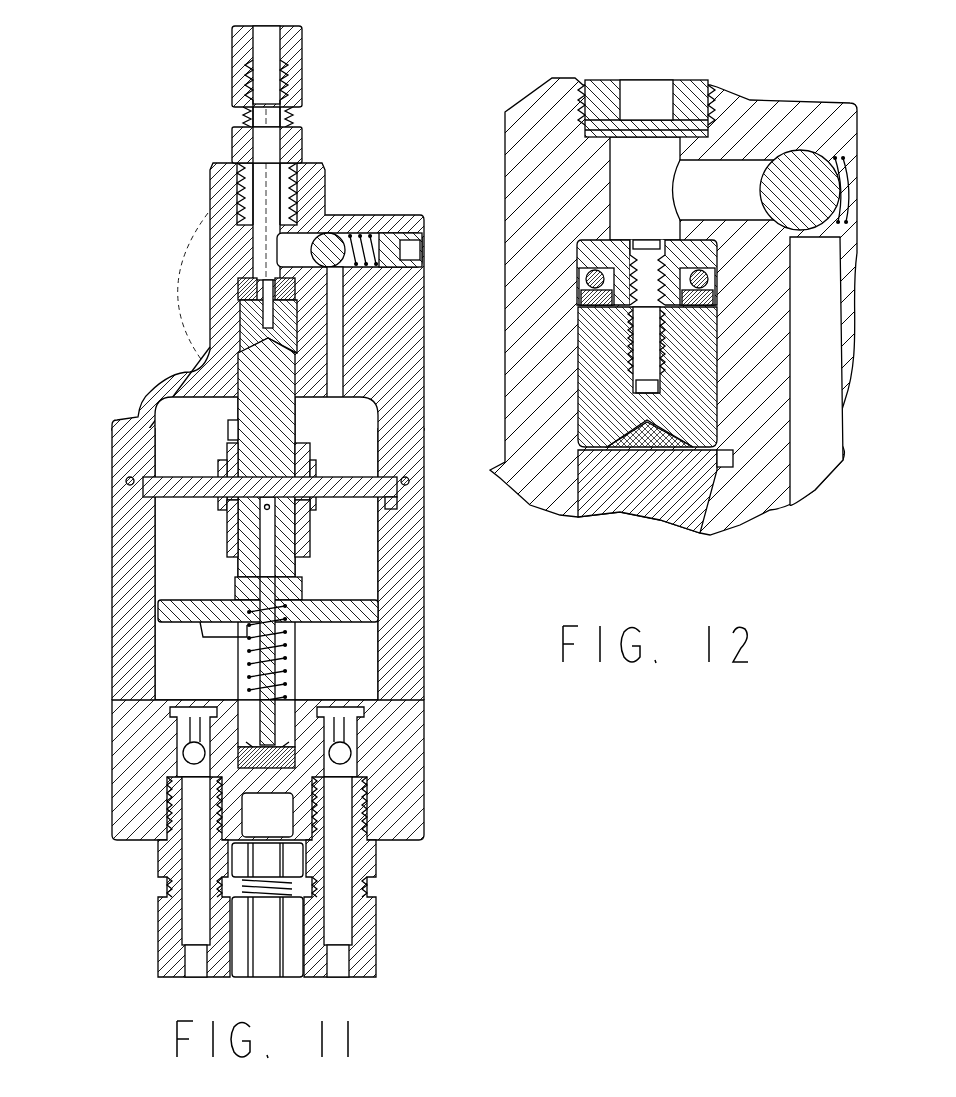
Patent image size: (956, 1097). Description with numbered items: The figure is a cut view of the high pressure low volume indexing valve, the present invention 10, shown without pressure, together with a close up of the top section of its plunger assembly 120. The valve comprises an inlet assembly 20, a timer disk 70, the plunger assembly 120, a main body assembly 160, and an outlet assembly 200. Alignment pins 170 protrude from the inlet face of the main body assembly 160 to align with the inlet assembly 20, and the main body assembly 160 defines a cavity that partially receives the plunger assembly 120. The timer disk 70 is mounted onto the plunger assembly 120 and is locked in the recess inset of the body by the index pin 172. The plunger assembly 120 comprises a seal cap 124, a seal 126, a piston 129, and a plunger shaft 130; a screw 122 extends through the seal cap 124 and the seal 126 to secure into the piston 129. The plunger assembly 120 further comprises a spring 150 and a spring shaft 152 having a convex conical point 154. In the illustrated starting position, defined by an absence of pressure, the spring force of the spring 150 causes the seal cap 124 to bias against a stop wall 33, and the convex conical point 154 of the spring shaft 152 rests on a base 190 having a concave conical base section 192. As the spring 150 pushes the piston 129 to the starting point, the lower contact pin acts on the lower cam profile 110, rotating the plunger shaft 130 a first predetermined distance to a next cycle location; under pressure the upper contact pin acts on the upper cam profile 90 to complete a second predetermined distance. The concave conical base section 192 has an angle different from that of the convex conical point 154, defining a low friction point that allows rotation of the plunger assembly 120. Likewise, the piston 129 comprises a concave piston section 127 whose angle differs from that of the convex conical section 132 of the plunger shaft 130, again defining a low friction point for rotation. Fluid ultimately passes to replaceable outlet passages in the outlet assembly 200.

In FIG. 11, the present invention 10 is at (367, 122).
In FIG. 11, the inlet assembly 20 is at (197, 58).
In FIG. 12, the inlet assembly 20 is at (553, 125).
In FIG. 12, the stop wall 33 is at (690, 240).
In FIG. 11, the timer disk 70 is at (142, 490).
In FIG. 11, the upper cam profile 90 is at (225, 450).
In FIG. 11, the lower cam profile 110 is at (228, 537).
In FIG. 11, the plunger assembly 120 is at (240, 407).
In FIG. 12, the screw 122 is at (643, 240).
In FIG. 12, the seal cap 124 is at (718, 250).
In FIG. 12, the seal 126 is at (583, 297).
In FIG. 12, the concave piston section 127 is at (612, 460).
In FIG. 12, the piston 129 is at (578, 382).
In FIG. 11, the plunger shaft 130 is at (222, 468).
In FIG. 12, the plunger shaft 130 is at (703, 535).
In FIG. 12, the convex conical section 132 is at (735, 462).
In FIG. 11, the spring 150 is at (273, 612).
In FIG. 11, the spring shaft 152 is at (280, 645).
In FIG. 11, the convex conical point 154 is at (350, 770).
In FIG. 11, the main body assembly 160 is at (110, 617).
In FIG. 11, the alignment pins 170 is at (402, 493).
In FIG. 11, the index pin 172 is at (400, 505).
In FIG. 11, the base 190 is at (290, 757).
In FIG. 11, the concave conical base section 192 is at (343, 742).
In FIG. 11, the outlet assembly 200 is at (155, 927).